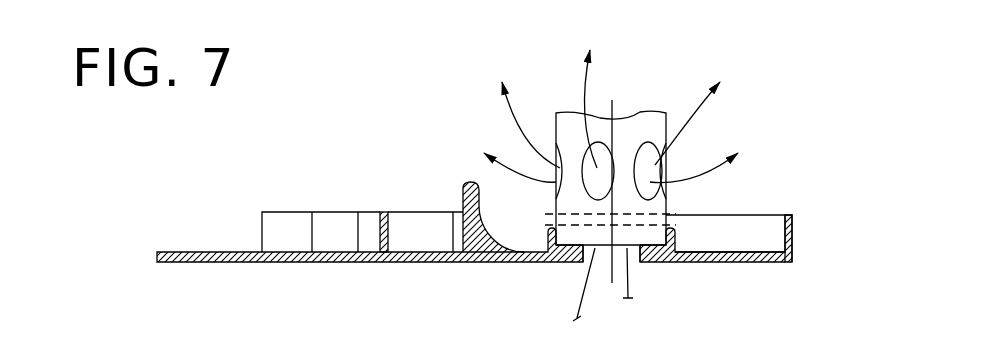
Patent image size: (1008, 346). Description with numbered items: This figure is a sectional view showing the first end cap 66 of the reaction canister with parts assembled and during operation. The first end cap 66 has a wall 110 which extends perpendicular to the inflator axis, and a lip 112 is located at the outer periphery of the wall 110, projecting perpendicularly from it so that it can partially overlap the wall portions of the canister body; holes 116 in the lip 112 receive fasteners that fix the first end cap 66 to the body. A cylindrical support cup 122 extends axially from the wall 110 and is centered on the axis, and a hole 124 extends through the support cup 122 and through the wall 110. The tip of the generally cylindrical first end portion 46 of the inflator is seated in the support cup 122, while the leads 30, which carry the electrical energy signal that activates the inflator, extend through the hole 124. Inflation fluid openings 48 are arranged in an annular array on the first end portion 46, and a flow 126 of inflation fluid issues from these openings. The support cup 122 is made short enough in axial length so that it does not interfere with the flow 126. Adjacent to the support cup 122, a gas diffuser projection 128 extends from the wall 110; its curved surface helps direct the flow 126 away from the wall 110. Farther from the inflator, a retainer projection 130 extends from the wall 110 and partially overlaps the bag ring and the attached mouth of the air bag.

The wall 110 is at (200, 252).
The lip 112 is at (268, 231).
The retainer projection 130 is at (381, 228).
The gas diffuser projection 128 is at (463, 200).
The first end portion 46 is at (630, 98).
The inflation fluid openings 48 is at (598, 166).
The flow 126 is at (508, 166).
The first end cap 66 is at (770, 198).
The support cup 122 is at (680, 250).
The holes 116 is at (792, 236).
The hole 124 is at (590, 263).
The leads 30 is at (587, 300).